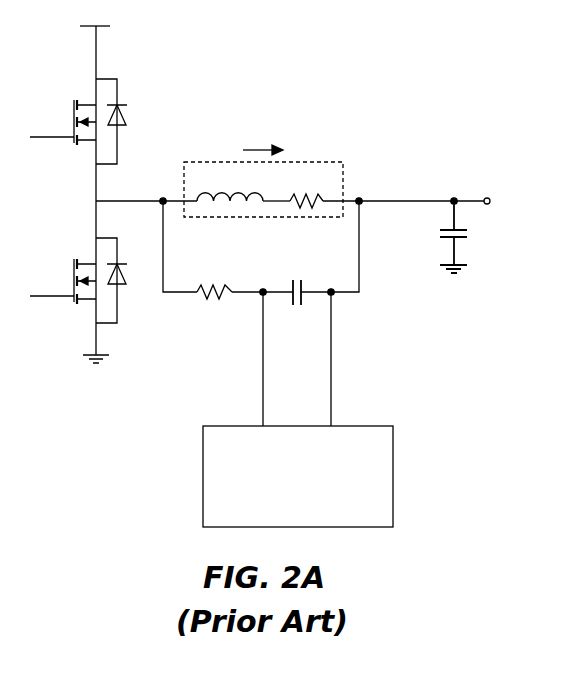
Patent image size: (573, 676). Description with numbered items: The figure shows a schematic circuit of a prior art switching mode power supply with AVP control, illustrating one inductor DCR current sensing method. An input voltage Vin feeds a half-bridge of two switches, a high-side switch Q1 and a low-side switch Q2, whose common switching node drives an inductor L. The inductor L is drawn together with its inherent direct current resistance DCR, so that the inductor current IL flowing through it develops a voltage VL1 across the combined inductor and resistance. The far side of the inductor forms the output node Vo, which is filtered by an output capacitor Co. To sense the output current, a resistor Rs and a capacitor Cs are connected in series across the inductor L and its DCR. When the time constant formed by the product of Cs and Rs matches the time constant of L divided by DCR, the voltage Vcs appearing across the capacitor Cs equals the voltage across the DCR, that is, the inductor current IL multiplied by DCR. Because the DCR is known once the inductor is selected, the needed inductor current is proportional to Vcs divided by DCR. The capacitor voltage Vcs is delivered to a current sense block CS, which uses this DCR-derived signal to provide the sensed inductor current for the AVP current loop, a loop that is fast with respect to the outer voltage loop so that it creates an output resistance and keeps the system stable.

The input voltage supply Vin is at (106, 28).
The high-side switch transistor Q1 is at (78, 121).
The low-side switch transistor Q2 is at (78, 280).
The inductor L is at (230, 186).
The inductor direct current resistance DCR is at (305, 190).
The inductor current IL is at (263, 141).
The inductor voltage VL1 is at (310, 226).
The output voltage node Vo is at (460, 189).
The output capacitor Co is at (465, 237).
The resistor Rs is at (214, 282).
The capacitor Cs is at (299, 285).
The voltage of capacitor Vcs is at (322, 310).
The current sense block CS is at (298, 476).